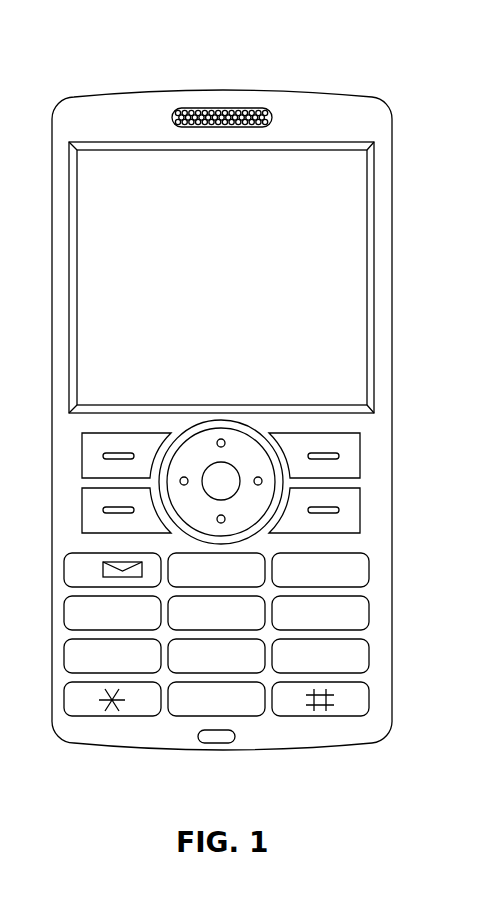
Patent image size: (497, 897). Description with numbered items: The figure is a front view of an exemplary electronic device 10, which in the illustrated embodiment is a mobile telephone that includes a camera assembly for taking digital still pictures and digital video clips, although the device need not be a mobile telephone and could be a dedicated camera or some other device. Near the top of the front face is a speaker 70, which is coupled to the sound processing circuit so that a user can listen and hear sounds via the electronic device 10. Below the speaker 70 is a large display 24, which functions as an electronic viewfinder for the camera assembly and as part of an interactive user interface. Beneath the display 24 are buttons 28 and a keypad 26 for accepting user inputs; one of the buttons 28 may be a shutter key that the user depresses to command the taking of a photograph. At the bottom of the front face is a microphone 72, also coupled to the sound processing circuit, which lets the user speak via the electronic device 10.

The electronic device 10 is at (64, 80).
The speaker 70 is at (222, 109).
The display 24 is at (353, 202).
The buttons 28 is at (382, 482).
The keypad 26 is at (133, 736).
The microphone 72 is at (223, 744).